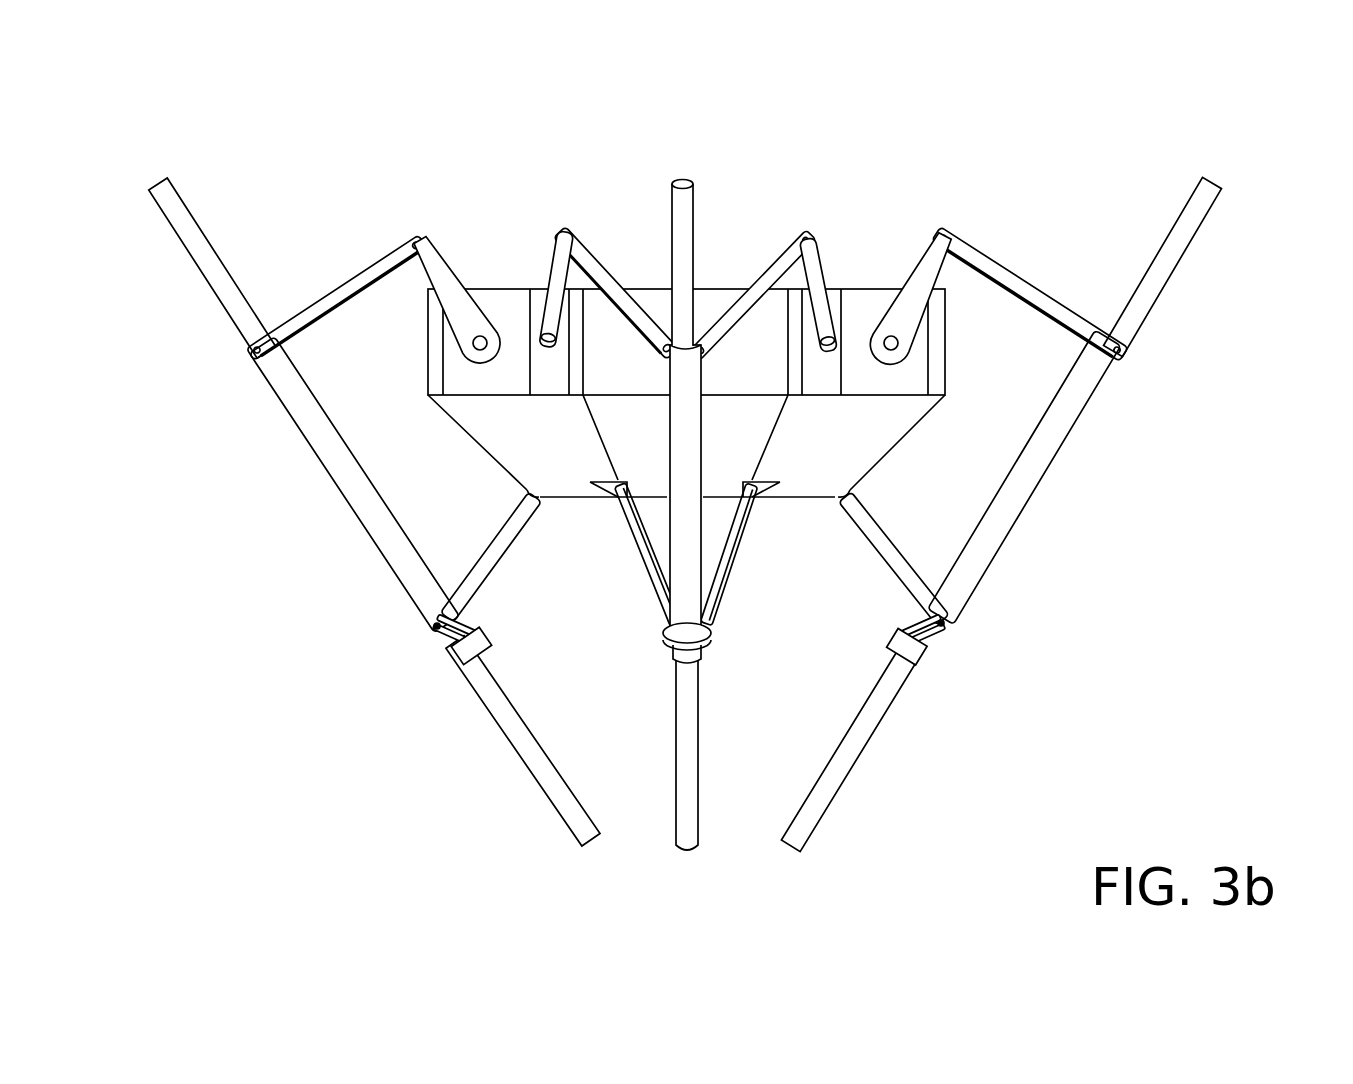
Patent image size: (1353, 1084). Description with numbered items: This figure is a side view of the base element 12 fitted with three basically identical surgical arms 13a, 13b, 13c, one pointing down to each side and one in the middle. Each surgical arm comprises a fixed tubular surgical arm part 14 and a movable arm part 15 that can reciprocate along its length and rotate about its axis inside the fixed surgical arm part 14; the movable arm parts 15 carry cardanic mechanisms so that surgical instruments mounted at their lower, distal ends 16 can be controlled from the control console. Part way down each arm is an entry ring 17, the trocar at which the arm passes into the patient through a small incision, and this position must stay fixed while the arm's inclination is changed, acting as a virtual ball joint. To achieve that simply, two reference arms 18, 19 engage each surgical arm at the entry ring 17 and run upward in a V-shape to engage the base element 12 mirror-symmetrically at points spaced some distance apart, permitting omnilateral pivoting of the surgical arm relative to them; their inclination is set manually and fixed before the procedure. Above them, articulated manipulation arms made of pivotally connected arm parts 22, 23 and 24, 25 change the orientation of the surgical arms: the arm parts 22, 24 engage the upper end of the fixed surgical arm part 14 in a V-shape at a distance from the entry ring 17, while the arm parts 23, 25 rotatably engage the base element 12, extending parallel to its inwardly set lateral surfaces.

The base element 12 is at (478, 227).
The surgical arm 13a is at (155, 179).
The surgical arm 13b is at (683, 173).
The surgical arm 13c is at (1217, 173).
The fixed tubular surgical arm part 14 is at (328, 438).
The movable arm part 15 is at (682, 206).
The distal end 16 is at (577, 820).
The entry ring 17 is at (435, 643).
The reference arm 18 is at (640, 540).
The reference arm 19 is at (503, 533).
The arm part 22 is at (613, 275).
The arm part 23 is at (552, 300).
The arm part 24 is at (348, 293).
The arm part 25 is at (433, 273).